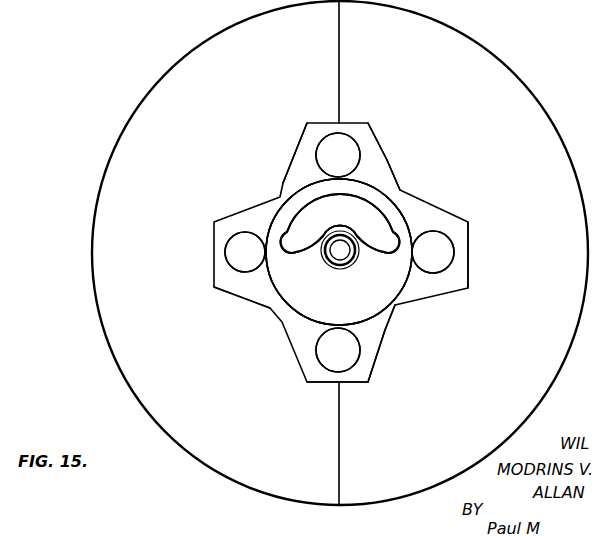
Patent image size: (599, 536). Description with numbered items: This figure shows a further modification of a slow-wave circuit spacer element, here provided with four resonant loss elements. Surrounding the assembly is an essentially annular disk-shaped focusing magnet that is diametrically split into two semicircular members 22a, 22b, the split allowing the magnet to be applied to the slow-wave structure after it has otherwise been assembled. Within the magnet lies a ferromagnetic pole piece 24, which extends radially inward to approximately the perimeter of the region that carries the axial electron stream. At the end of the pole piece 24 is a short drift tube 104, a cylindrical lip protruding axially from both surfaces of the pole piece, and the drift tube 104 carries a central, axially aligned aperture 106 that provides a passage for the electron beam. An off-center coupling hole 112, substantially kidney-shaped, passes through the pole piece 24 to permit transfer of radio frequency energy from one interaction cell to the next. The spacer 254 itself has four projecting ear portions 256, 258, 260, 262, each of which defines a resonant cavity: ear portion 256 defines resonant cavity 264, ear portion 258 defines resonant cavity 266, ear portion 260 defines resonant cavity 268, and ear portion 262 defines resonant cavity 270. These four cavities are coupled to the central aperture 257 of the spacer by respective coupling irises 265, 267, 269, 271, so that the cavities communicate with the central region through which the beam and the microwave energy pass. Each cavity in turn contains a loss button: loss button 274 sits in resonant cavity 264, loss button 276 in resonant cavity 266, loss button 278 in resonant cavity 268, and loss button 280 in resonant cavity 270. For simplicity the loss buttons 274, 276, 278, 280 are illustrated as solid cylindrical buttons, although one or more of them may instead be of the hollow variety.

The semicircular member 22a is at (534, 95).
The semicircular member 22b is at (185, 54).
The ferromagnetic pole piece 24 is at (386, 298).
The drift tube 104 is at (340, 269).
The aperture 106 is at (330, 252).
The coupling hole 112 is at (390, 223).
The spacer 254 is at (401, 190).
The ear portion 256 is at (378, 145).
The central aperture 257 is at (285, 183).
The ear portion 258 is at (468, 257).
The ear portion 260 is at (360, 383).
The ear portion 262 is at (225, 295).
The resonant cavity 264 is at (343, 133).
The coupling iris 265 is at (340, 223).
The resonant cavity 266 is at (447, 232).
The coupling iris 267 is at (410, 239).
The resonant cavity 268 is at (333, 372).
The coupling iris 269 is at (327, 325).
The resonant cavity 270 is at (226, 266).
The coupling iris 271 is at (270, 249).
The loss button 274 is at (331, 142).
The loss button 276 is at (438, 266).
The loss button 278 is at (333, 357).
The loss button 280 is at (230, 244).